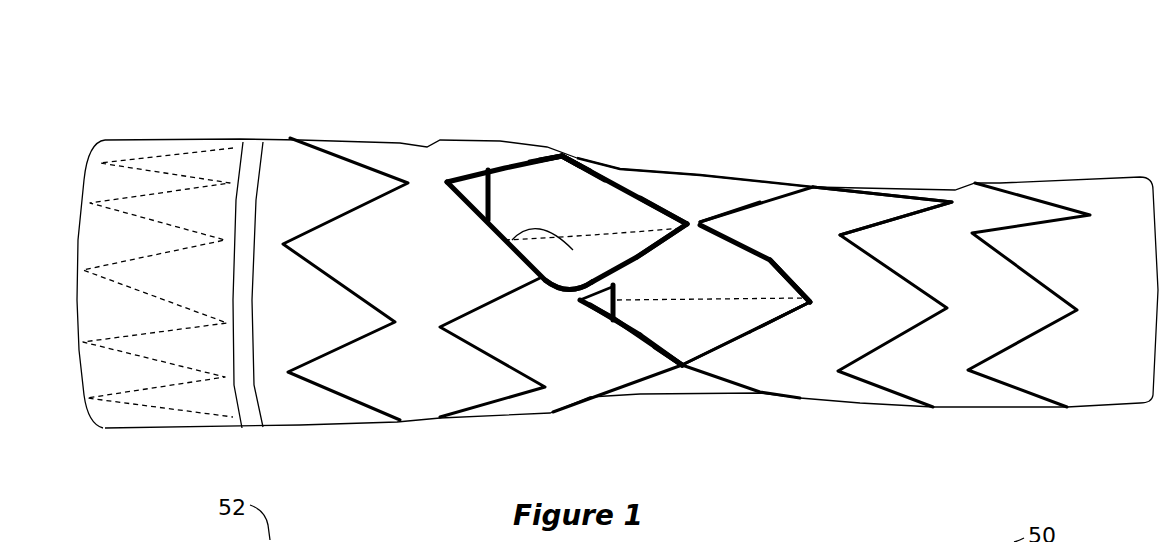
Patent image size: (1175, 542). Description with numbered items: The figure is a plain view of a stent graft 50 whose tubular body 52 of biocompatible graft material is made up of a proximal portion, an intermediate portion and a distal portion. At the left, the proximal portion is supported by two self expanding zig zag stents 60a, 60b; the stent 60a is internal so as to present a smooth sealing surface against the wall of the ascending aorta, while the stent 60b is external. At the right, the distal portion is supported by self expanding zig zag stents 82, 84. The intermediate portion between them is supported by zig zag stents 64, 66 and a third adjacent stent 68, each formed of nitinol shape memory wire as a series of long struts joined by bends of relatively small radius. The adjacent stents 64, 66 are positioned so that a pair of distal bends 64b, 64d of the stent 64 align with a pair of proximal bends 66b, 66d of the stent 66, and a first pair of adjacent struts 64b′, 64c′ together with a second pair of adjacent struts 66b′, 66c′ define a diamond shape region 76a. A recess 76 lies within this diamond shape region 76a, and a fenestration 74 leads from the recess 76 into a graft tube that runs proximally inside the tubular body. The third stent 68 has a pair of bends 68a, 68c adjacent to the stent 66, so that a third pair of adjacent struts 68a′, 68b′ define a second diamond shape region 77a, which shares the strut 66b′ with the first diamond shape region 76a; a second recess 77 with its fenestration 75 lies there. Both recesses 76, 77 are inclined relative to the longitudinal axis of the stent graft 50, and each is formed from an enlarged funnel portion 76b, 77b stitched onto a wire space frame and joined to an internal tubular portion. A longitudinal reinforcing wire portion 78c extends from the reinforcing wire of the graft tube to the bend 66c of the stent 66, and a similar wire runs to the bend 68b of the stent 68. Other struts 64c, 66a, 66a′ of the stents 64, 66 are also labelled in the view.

The stent graft 50 is at (986, 128).
The tubular body 52 is at (284, 172).
The self expanding zig zag stent 60a is at (162, 412).
The self expanding zig zag stent 60b is at (342, 427).
The stent 64 is at (484, 420).
The distal bend 64b is at (550, 294).
The strut 64b′ is at (468, 207).
The strut 64c is at (437, 173).
The strut 64c′ is at (480, 170).
The distal bend 64d is at (565, 205).
The stent 66 is at (638, 396).
The strut 66a is at (686, 368).
The strut 66a′ is at (622, 345).
The proximal bend 66b is at (574, 308).
The strut 66b′ is at (652, 253).
The bend 66c is at (703, 220).
The strut 66c′ is at (647, 190).
The proximal bend 66d is at (578, 195).
The stent 68 is at (725, 386).
The bend 68a is at (692, 315).
The strut 68a′ is at (777, 310).
The bend 68b is at (840, 258).
The strut 68b′ is at (770, 253).
The bend 68c is at (708, 216).
The fenestration 74 is at (504, 199).
The fenestration 75 is at (752, 310).
The recess 76 is at (608, 229).
The diamond shape region 76a is at (573, 205).
The enlarged funnel portion 76b is at (555, 193).
The recess 77 is at (750, 289).
The second diamond shape region 77a is at (636, 305).
The enlarged funnel portion 77b is at (693, 313).
The longitudinal reinforcing wire portion 78c is at (512, 244).
The self expanding zig zag stent 82 is at (904, 412).
The self expanding zig zag stent 84 is at (1010, 412).